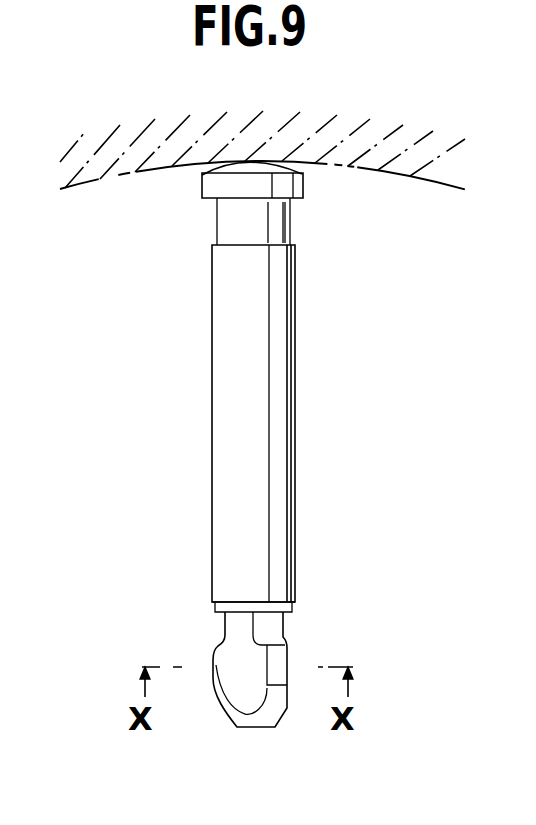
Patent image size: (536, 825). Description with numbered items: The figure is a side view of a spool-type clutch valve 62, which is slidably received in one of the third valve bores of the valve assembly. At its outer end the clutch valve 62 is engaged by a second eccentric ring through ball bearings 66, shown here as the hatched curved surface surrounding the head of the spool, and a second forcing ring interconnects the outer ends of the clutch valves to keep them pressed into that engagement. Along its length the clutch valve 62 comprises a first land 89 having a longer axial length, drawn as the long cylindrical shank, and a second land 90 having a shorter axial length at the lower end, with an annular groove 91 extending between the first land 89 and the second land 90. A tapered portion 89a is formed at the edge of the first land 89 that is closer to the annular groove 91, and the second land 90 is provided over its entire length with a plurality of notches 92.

The ball bearings 66 is at (383, 168).
The clutch valve 62 is at (298, 362).
The first land 89 is at (225, 422).
The tapered portion 89a is at (247, 600).
The annular groove 91 is at (283, 630).
The second land 90 is at (277, 667).
The notches 92 is at (230, 675).